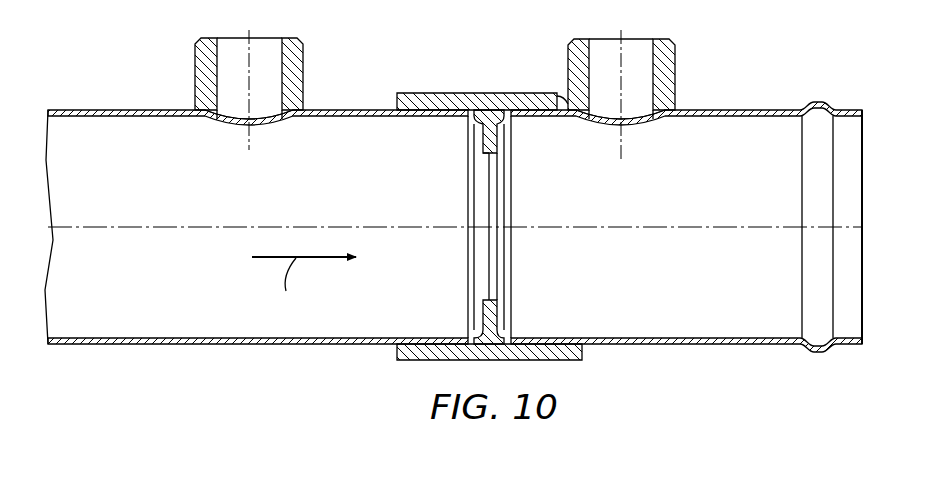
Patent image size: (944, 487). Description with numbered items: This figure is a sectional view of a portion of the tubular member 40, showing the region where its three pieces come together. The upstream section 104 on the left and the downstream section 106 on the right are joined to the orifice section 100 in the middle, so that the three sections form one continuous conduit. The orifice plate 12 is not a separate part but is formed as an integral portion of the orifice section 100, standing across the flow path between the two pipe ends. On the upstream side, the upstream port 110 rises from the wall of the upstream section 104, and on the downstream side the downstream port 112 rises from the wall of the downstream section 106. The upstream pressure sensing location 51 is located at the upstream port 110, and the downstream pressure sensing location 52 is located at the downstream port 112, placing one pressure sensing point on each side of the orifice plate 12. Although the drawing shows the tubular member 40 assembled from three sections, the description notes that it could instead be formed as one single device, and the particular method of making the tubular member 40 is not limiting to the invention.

The tubular member 40 is at (453, 237).
The upstream section 104 is at (70, 110).
The downstream section 106 is at (744, 110).
The orifice section 100 is at (434, 92).
The orifice plate 12 is at (497, 134).
The upstream port 110 is at (305, 63).
The downstream port 112 is at (676, 66).
The upstream pressure sensing location 51 is at (262, 124).
The downstream pressure sensing location 52 is at (633, 124).